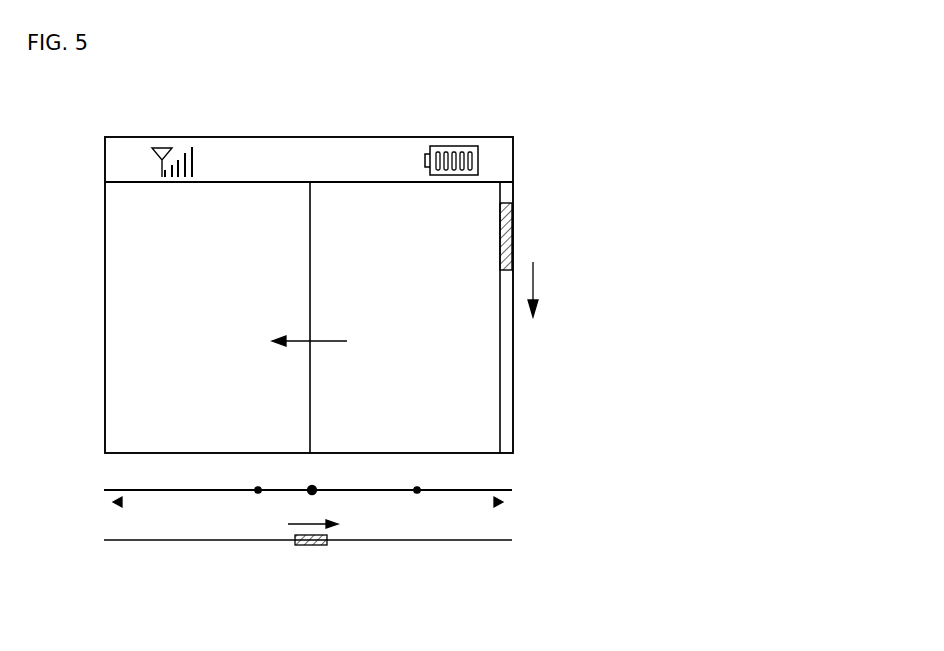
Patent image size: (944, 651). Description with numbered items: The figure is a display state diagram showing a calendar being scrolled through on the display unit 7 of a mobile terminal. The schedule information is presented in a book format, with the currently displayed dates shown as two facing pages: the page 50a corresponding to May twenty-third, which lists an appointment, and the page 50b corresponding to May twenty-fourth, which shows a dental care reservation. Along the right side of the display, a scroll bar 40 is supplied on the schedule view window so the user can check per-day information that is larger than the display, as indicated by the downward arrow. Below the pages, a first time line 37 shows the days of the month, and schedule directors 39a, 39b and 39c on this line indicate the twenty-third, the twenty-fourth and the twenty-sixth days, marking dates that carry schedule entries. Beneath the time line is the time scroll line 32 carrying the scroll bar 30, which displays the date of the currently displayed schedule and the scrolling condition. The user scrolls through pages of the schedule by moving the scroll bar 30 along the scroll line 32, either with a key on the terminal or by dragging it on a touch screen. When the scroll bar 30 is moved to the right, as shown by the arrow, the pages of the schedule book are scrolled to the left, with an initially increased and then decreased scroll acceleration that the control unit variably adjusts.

The display unit 7 is at (461, 137).
The scroll bar 40 is at (512, 236).
The page 50a is at (120, 363).
The page 50b is at (483, 408).
The first time line 37 is at (103, 502).
The schedule director 39a is at (258, 490).
The schedule director 39b is at (312, 490).
The schedule director 39c is at (417, 490).
The time scroll line 32 is at (105, 540).
The scroll bar 30 is at (310, 546).